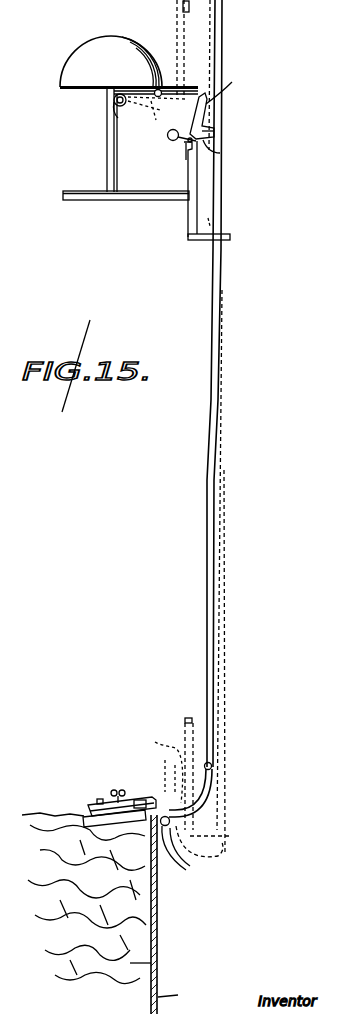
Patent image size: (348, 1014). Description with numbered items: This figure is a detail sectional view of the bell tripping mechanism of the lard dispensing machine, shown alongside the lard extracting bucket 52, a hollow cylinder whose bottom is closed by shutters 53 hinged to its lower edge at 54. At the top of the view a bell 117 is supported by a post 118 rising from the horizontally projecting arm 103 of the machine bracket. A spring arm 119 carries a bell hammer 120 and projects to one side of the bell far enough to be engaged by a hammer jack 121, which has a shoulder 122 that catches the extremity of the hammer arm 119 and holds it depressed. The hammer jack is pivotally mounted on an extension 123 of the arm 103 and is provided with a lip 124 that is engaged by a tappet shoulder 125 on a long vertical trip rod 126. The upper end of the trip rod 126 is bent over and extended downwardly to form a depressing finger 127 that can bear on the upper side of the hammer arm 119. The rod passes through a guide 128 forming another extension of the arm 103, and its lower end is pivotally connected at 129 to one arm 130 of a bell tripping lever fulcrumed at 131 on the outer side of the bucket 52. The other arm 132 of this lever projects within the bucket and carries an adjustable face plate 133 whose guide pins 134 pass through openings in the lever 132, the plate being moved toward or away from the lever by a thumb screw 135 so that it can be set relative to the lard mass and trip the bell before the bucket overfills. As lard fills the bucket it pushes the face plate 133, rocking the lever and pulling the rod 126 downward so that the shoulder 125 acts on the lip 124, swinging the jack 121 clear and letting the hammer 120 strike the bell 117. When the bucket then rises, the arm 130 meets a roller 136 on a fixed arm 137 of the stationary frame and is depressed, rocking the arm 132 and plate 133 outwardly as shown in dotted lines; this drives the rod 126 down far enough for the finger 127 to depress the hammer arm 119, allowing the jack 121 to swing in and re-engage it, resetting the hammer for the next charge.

The bell 117 is at (92, 50).
The spring arm 119 is at (131, 90).
The bell hammer 120 is at (150, 112).
The post 118 is at (107, 152).
The horizontal arm 103 is at (146, 200).
The depressing finger 127 is at (183, 7).
The hammer jack 121 is at (210, 111).
The shoulder 122 is at (235, 84).
The tappet shoulder 125 is at (222, 133).
The lip 124 is at (222, 153).
The extension 123 is at (190, 178).
The guide 128 is at (232, 237).
The trip rod 126 is at (212, 373).
The fixed arm 137 is at (212, 720).
The pivotal connection 129 is at (211, 766).
The arm of bell tripping lever 130 is at (212, 798).
The roller 136 is at (196, 837).
The fulcrum 131 is at (189, 860).
The guide pins 134 is at (98, 800).
The thumb screw 135 is at (119, 790).
The arm of bell tripping lever 132 is at (128, 812).
The adjustable face plate 133 is at (88, 817).
The lard extracting bucket 52 is at (157, 916).
The hinge 54 is at (158, 964).
The shutters 53 is at (184, 998).